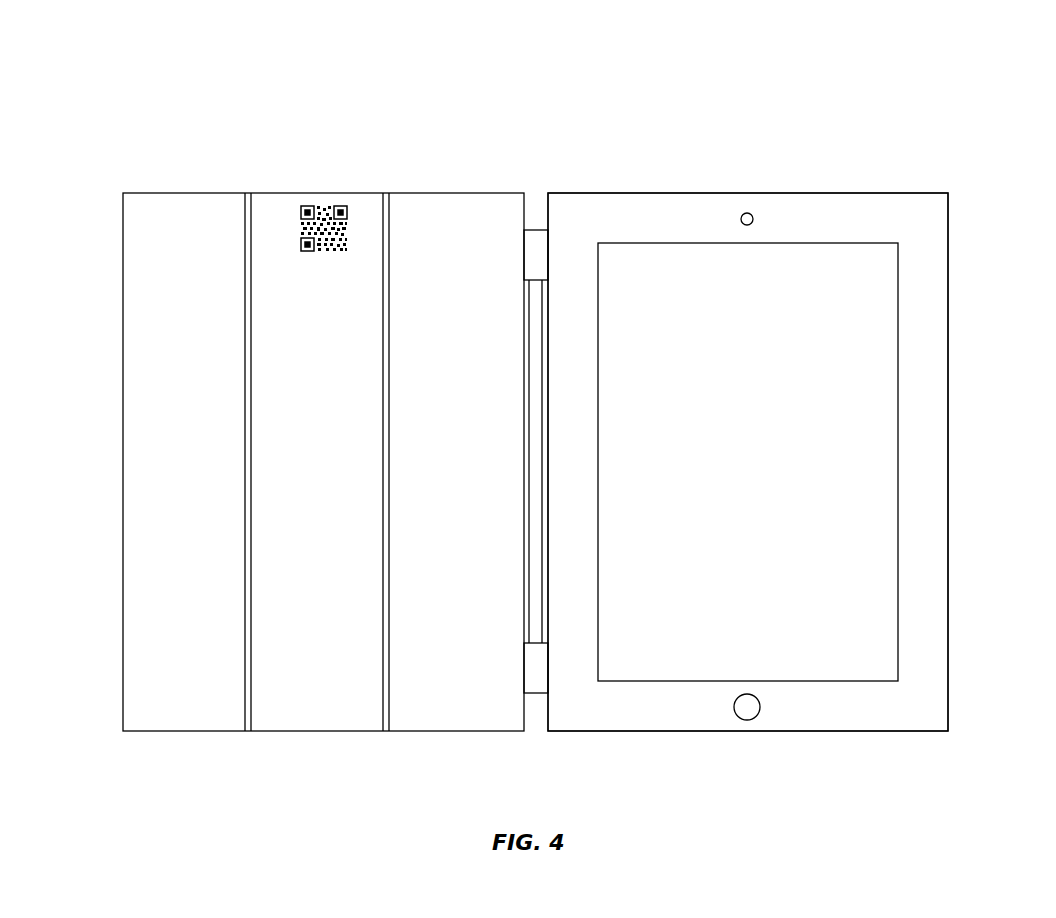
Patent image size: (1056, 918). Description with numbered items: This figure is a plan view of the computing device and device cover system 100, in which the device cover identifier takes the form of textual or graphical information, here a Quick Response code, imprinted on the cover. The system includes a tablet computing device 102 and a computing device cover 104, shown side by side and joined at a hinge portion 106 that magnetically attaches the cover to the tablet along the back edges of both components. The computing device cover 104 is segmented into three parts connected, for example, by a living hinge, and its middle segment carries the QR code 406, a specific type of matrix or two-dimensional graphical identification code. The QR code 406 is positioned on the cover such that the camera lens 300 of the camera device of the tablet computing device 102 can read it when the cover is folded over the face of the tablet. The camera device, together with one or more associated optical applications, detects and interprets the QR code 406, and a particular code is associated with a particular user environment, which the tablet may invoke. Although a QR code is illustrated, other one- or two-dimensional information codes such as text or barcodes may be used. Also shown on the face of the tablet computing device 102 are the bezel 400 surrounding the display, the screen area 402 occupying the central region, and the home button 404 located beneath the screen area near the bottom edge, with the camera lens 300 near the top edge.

The computing device and device cover system 100 is at (214, 88).
The tablet computing device 102 is at (890, 193).
The computing device cover 104 is at (425, 192).
The hinge portion 106 is at (536, 230).
The camera lens 300 is at (750, 213).
The bezel 400 is at (926, 278).
The screen area 402 is at (873, 558).
The home button 404 is at (755, 716).
The QR code 406 is at (325, 210).